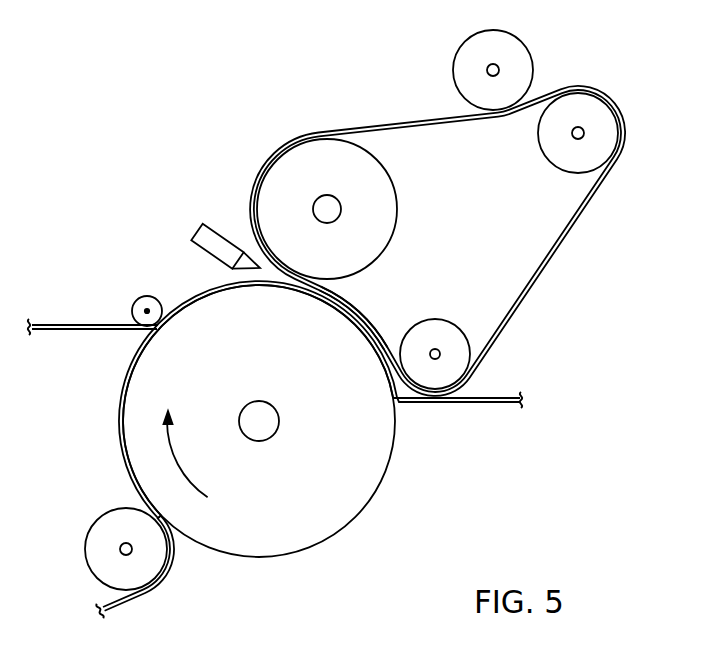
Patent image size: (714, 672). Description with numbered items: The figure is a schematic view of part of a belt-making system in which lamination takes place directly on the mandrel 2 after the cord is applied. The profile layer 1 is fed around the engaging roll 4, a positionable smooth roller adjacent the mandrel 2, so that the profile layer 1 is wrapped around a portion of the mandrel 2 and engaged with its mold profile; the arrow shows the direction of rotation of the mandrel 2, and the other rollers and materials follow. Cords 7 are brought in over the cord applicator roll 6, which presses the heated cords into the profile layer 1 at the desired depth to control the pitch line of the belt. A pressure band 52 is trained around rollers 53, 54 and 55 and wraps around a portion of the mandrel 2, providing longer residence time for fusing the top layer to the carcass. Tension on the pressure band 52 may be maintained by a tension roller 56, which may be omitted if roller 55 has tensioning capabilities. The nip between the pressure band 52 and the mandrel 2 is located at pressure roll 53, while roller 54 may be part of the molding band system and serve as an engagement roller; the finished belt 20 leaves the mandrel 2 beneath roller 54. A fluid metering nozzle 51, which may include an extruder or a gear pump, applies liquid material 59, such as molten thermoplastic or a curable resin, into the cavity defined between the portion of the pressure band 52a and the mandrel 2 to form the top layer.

The profile layer 1 is at (128, 605).
The mandrel 2 is at (330, 521).
The engaging roll 4 is at (105, 526).
The cord applicator roll 6 is at (139, 297).
The cords 7 is at (60, 326).
The laminated web leaving the drum 20 is at (497, 397).
The fluid metering nozzle 51 is at (203, 226).
The pressure band 52 is at (548, 259).
The portion of the pressure band 52a is at (369, 312).
The pressure roll 53 is at (391, 182).
The roller 54 is at (451, 322).
The roller 55 is at (597, 106).
The tension roller 56 is at (519, 53).
The liquid material 59 is at (350, 297).